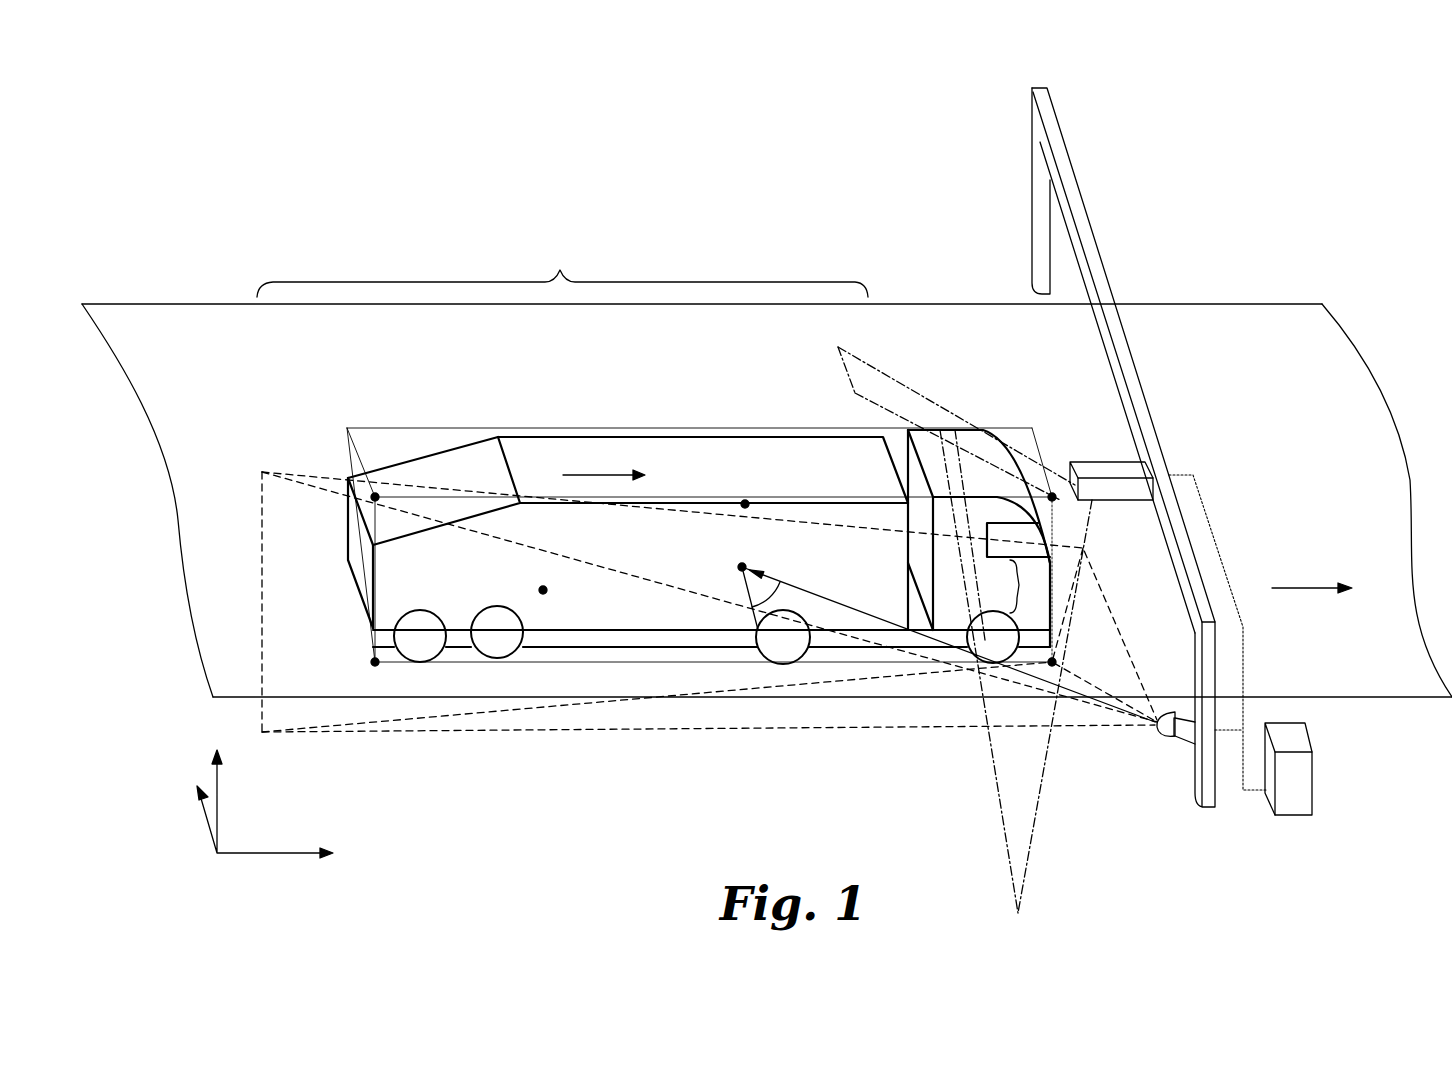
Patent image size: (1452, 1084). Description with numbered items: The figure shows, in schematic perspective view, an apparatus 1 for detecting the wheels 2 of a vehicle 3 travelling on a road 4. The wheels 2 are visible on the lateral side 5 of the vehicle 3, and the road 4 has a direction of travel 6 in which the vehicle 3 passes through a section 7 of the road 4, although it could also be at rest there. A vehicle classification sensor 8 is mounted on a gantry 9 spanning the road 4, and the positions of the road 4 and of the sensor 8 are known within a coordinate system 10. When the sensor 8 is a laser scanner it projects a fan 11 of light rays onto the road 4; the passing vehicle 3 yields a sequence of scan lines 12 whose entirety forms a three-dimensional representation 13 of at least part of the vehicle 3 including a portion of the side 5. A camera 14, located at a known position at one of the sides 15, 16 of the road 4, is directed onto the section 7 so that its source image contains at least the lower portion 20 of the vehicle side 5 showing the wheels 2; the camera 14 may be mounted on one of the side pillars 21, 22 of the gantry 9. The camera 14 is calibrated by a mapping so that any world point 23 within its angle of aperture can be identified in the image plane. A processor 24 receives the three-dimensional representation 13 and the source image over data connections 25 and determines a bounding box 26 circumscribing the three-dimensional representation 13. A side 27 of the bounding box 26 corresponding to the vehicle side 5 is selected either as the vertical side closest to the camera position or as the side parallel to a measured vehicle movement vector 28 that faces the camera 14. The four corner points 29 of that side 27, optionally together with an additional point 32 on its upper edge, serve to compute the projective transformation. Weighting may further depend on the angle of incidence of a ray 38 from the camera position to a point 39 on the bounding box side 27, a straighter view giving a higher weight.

The apparatus 1 is at (1322, 220).
The wheels 2 is at (432, 648).
The vehicle 3 is at (738, 465).
The road 4 is at (1160, 322).
The lateral side 5 is at (630, 527).
The direction of travel 6 is at (1298, 587).
The section 7 is at (562, 264).
The vehicle classification sensor 8 is at (1105, 467).
The gantry 9 is at (1056, 140).
The coordinate system 10 is at (215, 855).
The fan of light rays 11 is at (940, 407).
The scan lines 12 is at (953, 562).
The 3D representation 13 is at (1031, 586).
The camera 14 is at (1190, 727).
The side of the road 15 is at (1425, 739).
The side of the road 16 is at (1275, 286).
The lower portion of the vehicle side 20 is at (650, 611).
The side pillar 21 is at (1208, 792).
The side pillar 22 is at (1034, 268).
The world point 23 is at (540, 588).
The processor 24 is at (1300, 790).
The data connections 25 is at (1243, 690).
The bounding box 26 is at (433, 428).
The bounding box side 27 is at (632, 648).
The vehicle movement vector 28 is at (587, 475).
The corner points 29 is at (378, 497).
The point on upper edge 32 is at (747, 502).
The ray 38 is at (842, 605).
The point 39 is at (740, 565).